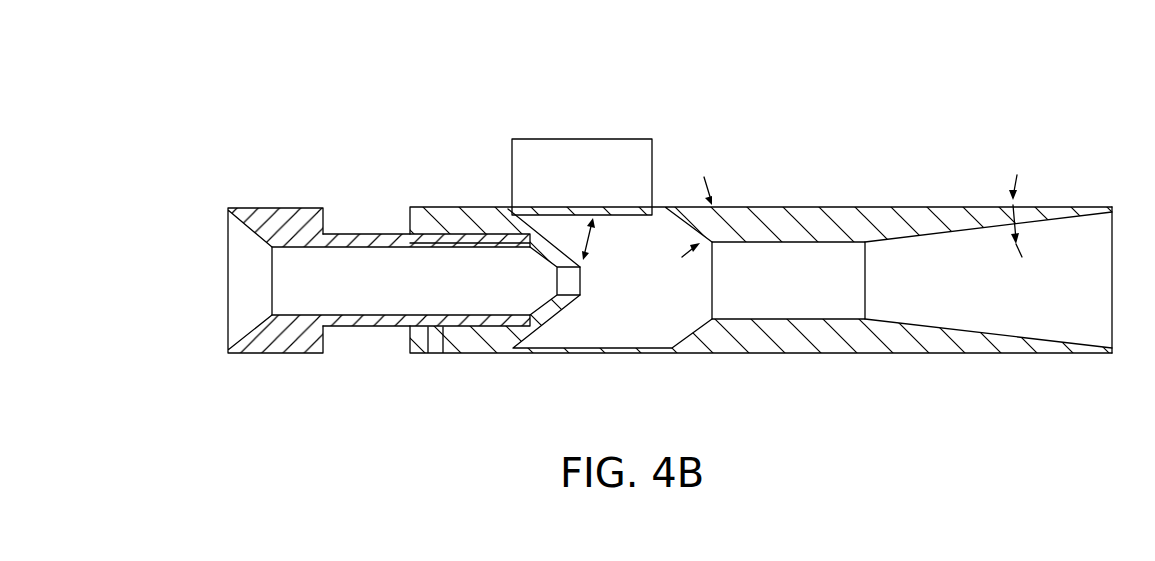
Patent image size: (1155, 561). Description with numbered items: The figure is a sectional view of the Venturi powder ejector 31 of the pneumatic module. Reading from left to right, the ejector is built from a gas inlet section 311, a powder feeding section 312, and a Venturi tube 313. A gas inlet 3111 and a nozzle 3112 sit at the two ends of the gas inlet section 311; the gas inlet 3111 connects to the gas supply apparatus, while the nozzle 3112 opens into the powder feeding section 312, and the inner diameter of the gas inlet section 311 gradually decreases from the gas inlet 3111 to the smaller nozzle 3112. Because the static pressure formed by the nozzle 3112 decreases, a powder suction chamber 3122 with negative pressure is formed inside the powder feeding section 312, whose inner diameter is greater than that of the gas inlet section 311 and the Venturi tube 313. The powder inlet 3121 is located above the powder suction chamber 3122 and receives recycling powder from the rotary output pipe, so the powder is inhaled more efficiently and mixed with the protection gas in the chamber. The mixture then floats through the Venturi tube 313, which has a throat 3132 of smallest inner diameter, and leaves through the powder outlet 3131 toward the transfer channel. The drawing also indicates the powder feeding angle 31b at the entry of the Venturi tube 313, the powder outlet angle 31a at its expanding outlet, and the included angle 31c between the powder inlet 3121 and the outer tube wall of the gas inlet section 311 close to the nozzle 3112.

The Venturi powder ejector 31 is at (218, 105).
The gas inlet section 311 is at (375, 322).
The gas inlet 3111 is at (250, 310).
The nozzle 3112 is at (570, 287).
The powder feeding section 312 is at (598, 352).
The powder inlet 3121 is at (545, 150).
The powder suction chamber 3122 is at (642, 278).
The Venturi tube 313 is at (885, 348).
The powder outlet 3131 is at (1077, 273).
The throat 3132 is at (810, 263).
The powder outlet angle 31a is at (993, 208).
The powder feeding angle 31b is at (712, 242).
The included angle 31c is at (597, 238).